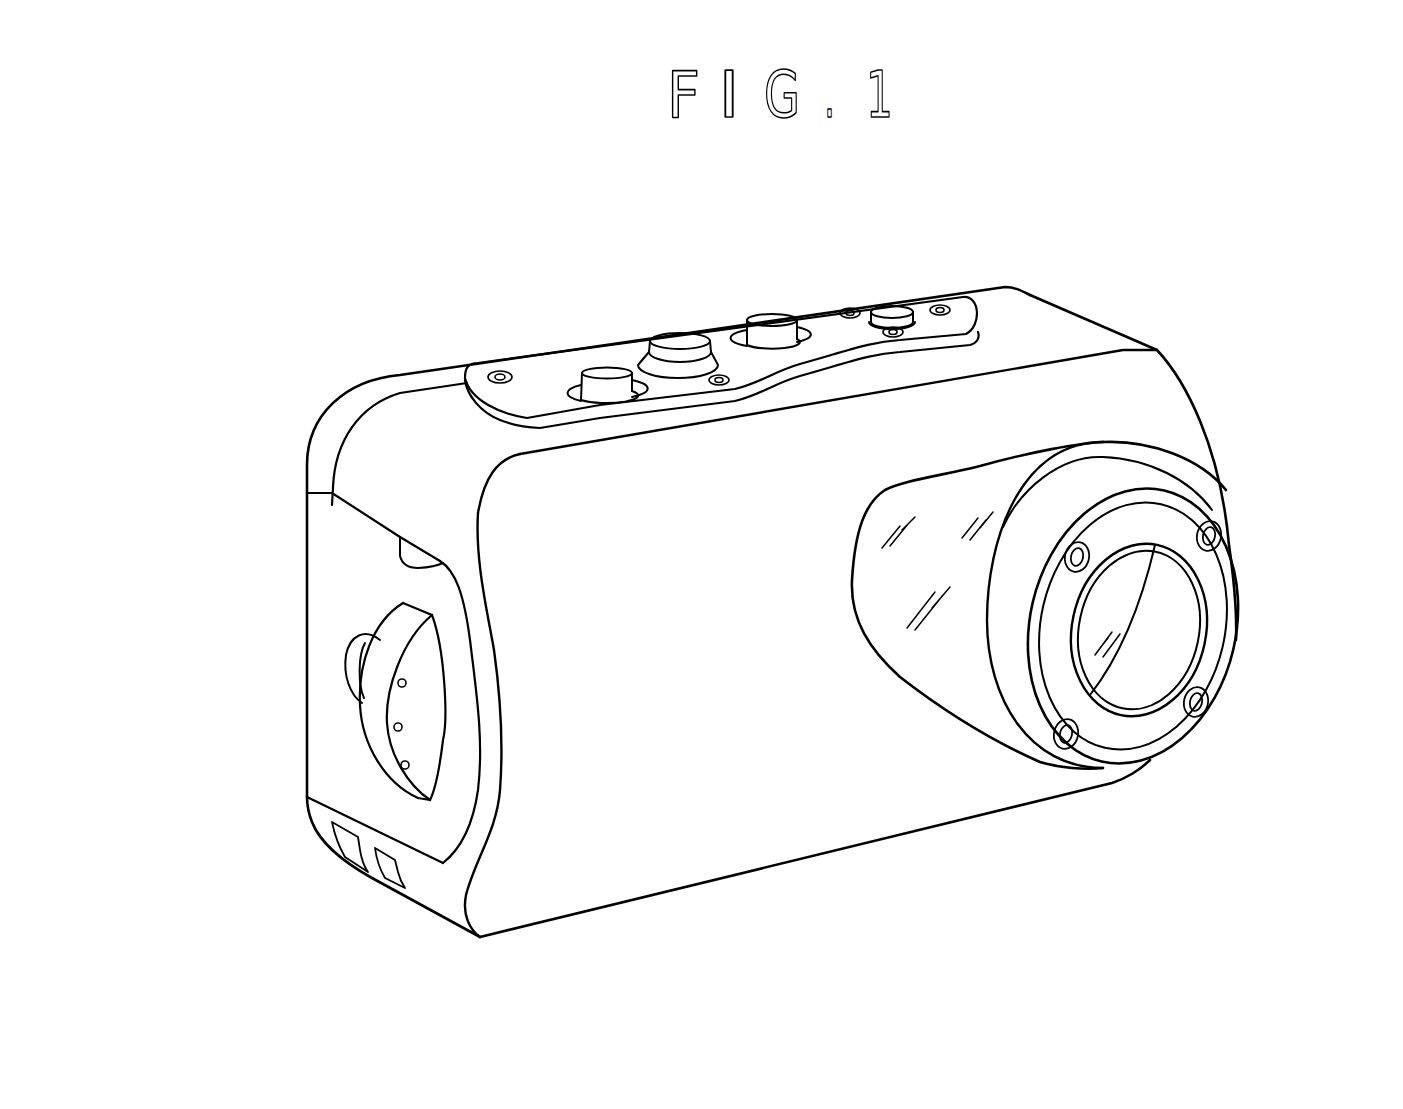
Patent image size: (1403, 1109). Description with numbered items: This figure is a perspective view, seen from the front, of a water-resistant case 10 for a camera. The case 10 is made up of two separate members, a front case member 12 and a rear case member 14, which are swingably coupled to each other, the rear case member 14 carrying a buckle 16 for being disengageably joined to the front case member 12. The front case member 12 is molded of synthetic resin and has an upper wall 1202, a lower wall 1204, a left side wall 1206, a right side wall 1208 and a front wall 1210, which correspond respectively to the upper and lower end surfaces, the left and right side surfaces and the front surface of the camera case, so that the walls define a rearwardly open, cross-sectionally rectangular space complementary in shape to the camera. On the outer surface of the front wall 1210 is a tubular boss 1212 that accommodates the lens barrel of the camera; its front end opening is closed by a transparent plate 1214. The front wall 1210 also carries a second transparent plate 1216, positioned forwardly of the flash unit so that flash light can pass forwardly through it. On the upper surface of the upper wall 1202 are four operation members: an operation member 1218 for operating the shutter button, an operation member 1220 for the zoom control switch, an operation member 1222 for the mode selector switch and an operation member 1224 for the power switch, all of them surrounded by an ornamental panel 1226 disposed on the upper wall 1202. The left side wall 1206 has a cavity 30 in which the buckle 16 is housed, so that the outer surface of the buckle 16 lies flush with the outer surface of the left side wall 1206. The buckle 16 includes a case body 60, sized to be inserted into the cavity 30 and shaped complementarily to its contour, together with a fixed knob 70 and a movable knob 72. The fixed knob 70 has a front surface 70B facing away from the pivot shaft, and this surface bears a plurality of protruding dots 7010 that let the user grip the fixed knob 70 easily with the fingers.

The water-resistant case 10 is at (1013, 242).
The front case member 12 is at (937, 805).
The rear case member 14 is at (388, 378).
The buckle 16 is at (320, 572).
The cavity 30 is at (447, 557).
The case body 60 is at (320, 762).
The fixed knob 70 is at (383, 757).
The front surface 70B is at (430, 685).
The protruding dots 7010 is at (415, 727).
The movable knob 72 is at (350, 677).
The upper wall 1202 is at (1058, 320).
The lower wall 1204 is at (752, 875).
The left side wall 1206 is at (353, 478).
The right side wall 1208 is at (1230, 490).
The front wall 1210 is at (587, 862).
The tubular boss 1212 is at (1113, 482).
The transparent plate 1214 is at (1133, 613).
The transparent plate 1216 is at (953, 497).
The operation member 1218 is at (683, 340).
The operation member 1220 is at (607, 372).
The operation member 1222 is at (776, 318).
The operation member 1224 is at (893, 310).
The ornamental panel 1226 is at (523, 366).